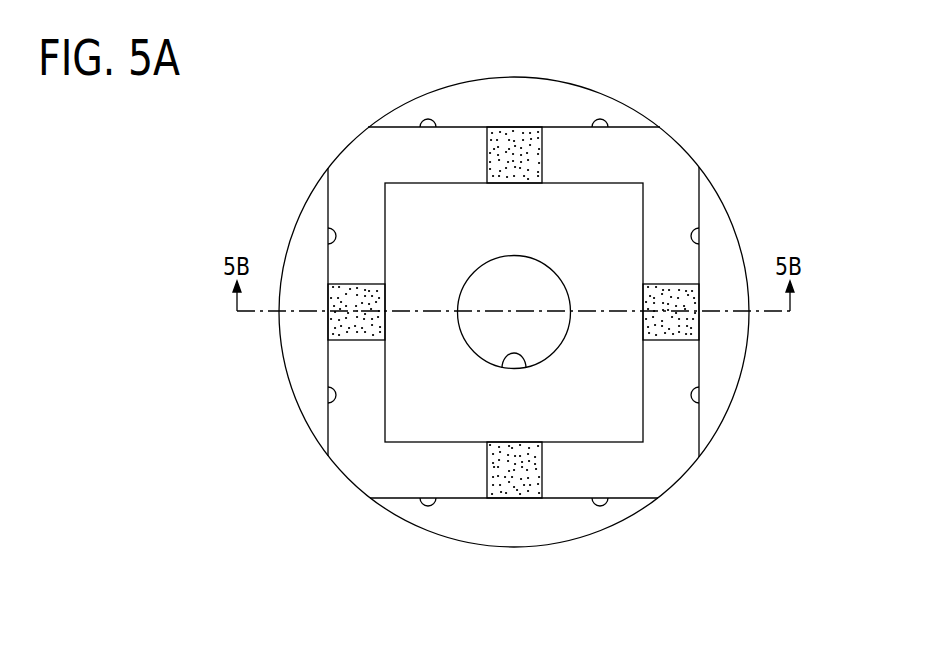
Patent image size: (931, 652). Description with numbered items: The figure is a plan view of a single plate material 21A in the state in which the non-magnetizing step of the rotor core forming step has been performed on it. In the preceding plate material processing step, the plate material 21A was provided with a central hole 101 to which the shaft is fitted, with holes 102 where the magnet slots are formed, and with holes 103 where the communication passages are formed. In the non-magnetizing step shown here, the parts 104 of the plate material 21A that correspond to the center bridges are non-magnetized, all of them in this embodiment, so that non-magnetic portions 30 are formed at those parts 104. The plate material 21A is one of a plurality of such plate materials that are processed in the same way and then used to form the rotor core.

The plate material 21A is at (505, 79).
The non-magnetic portion 30 is at (505, 138).
The hole 101 is at (527, 369).
The hole 102 is at (421, 127).
The hole 103 is at (385, 155).
The part corresponding to center bridge 104 is at (540, 152).